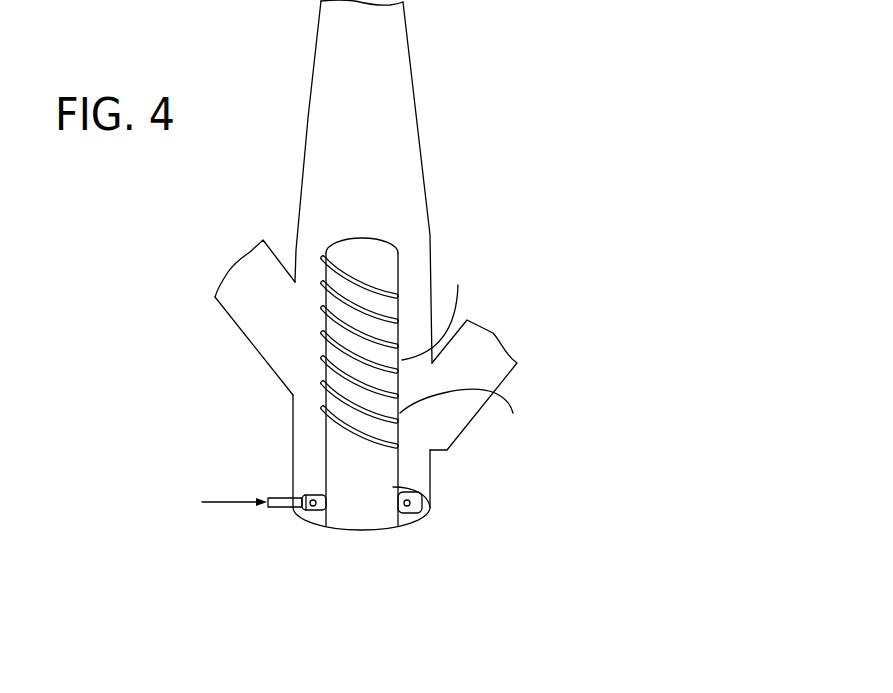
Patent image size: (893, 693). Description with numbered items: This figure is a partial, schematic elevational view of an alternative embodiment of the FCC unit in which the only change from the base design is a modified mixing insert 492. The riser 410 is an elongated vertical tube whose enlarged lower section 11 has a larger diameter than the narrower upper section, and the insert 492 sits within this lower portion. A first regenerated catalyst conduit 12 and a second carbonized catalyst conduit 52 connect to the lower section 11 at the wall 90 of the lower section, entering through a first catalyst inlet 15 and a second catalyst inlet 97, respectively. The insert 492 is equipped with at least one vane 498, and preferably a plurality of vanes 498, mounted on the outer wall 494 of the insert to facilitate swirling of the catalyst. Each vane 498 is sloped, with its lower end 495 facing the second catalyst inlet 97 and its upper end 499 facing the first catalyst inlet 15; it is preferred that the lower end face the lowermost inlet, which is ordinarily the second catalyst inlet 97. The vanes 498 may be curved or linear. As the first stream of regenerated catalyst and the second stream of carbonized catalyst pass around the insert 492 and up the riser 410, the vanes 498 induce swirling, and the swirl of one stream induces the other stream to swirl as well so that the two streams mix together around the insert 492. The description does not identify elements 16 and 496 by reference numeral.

The riser 410 is at (480, 106).
The enlarged lower section 11 is at (293, 258).
The outer wall 494 is at (398, 282).
The first regenerated catalyst conduit 12 is at (230, 320).
The first catalyst inlet 15 is at (292, 315).
The upper end 499 is at (322, 395).
The vane 498 is at (305, 402).
The wall 90 is at (293, 475).
The base 16 is at (352, 522).
The mixing insert 492 is at (435, 502).
The mounting bracket 496 is at (413, 472).
The second catalyst inlet 97 is at (432, 422).
The second carbonized catalyst conduit 52 is at (466, 385).
The lower end 495 is at (490, 390).